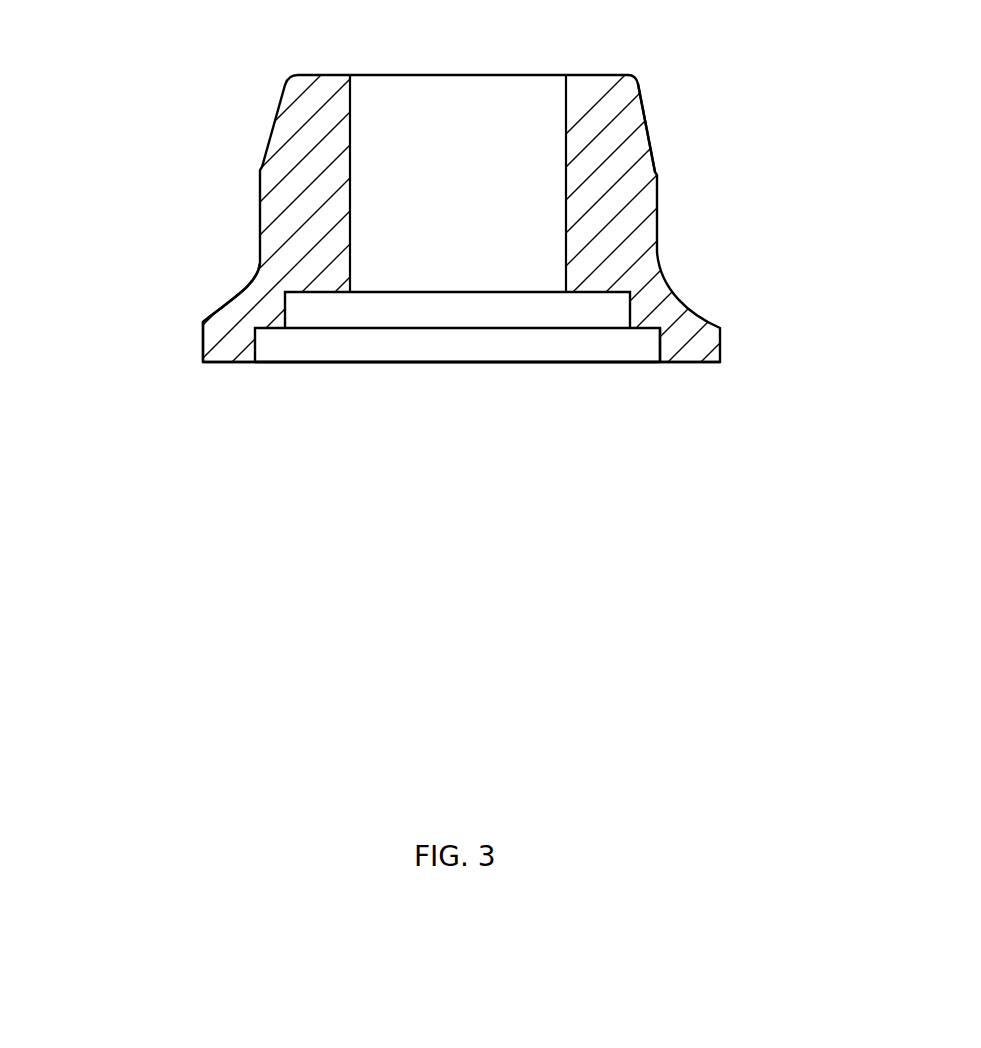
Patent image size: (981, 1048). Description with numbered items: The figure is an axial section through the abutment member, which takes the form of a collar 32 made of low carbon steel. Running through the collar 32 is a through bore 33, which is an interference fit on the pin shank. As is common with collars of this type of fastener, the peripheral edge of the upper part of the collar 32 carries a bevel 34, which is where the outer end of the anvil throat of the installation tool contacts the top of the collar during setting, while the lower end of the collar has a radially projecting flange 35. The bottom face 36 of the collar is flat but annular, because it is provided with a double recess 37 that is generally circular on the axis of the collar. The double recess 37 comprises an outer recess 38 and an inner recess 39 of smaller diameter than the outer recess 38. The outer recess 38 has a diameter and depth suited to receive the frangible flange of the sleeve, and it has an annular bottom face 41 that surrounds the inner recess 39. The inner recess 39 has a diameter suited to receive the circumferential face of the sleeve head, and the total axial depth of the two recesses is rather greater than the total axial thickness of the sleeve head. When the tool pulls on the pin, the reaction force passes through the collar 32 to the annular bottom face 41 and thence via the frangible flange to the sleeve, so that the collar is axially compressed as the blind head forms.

The collar 32 is at (255, 231).
The through bore 33 is at (350, 125).
The bevel 34 is at (642, 122).
The radially projecting flange 35 is at (217, 335).
The bottom face 36 is at (293, 363).
The double recess 37 is at (517, 337).
The outer recess 38 is at (365, 348).
The inner recess 39 is at (430, 312).
The annular bottom face 41 is at (637, 337).